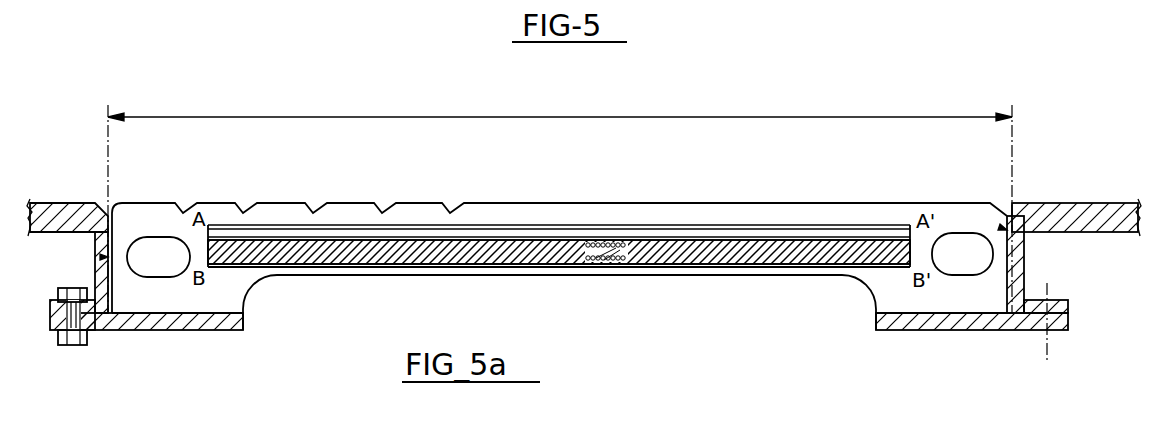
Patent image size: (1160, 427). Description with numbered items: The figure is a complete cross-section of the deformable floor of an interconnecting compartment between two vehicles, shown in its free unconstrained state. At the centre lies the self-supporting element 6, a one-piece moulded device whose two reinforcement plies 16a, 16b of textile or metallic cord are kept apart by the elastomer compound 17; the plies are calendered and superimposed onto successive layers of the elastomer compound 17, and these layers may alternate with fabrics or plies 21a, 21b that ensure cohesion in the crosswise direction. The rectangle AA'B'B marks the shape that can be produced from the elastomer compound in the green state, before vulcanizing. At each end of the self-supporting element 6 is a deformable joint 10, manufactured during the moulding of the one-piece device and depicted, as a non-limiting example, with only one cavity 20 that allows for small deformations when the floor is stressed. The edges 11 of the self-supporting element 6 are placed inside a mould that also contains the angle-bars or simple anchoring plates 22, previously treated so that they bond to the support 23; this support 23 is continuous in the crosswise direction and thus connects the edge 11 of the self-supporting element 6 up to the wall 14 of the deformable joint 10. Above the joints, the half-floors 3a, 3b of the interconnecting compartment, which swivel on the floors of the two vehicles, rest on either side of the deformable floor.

The half-floor 3a is at (97, 325).
The half-floor 3b is at (1018, 235).
The self-supporting element 6 is at (533, 222).
The deformable joint 10 is at (145, 208).
The edge 11 is at (197, 243).
The wall 14 is at (100, 257).
The reinforcement ply 16a is at (610, 238).
The reinforcement ply 16b is at (618, 266).
The elastomer compound 17 is at (632, 250).
The cavity 20 is at (173, 255).
The ply 21a is at (587, 247).
The ply 21b is at (597, 260).
The anchoring plate 22 is at (190, 325).
The support 23 is at (240, 287).